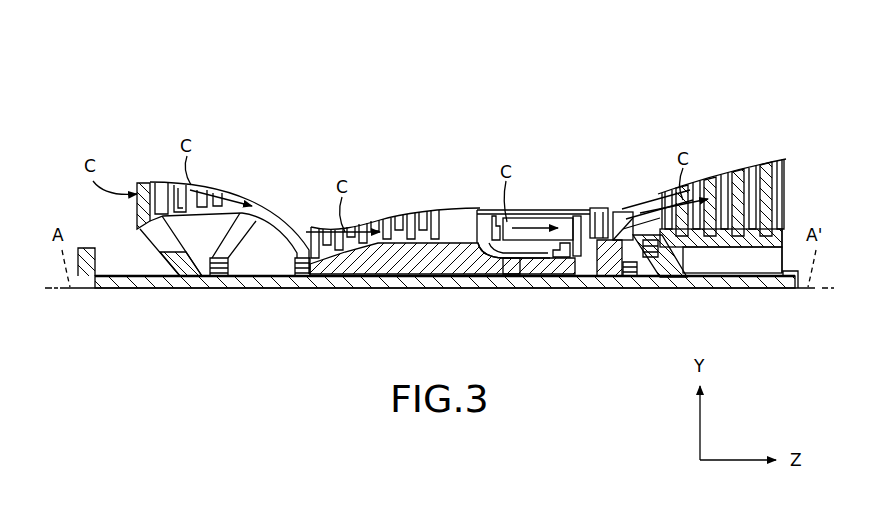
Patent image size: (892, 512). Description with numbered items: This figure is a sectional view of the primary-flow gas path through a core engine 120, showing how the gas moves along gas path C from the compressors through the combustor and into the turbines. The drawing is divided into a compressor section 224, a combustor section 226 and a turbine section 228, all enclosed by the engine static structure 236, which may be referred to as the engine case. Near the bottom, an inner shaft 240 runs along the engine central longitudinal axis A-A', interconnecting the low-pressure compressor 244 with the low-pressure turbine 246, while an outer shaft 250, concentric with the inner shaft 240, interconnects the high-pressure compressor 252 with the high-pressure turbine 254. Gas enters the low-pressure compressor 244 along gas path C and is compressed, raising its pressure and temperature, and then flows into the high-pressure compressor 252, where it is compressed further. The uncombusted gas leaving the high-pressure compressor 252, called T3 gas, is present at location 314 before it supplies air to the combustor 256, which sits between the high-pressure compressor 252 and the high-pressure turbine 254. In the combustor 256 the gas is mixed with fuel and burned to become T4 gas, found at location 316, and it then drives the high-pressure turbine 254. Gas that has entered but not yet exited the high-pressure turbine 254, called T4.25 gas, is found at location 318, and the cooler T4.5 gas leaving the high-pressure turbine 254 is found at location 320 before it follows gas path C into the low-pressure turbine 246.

The core engine 120 is at (579, 76).
The compressor section 224 is at (137, 121).
The combustor section 226 is at (585, 121).
The turbine section 228 is at (783, 121).
The engine static structure 236 is at (280, 205).
The inner shaft 240 is at (409, 284).
The low-pressure compressor 244 is at (216, 190).
The low-pressure turbine 246 is at (725, 178).
The outer shaft 250 is at (535, 272).
The high-pressure compressor 252 is at (400, 224).
The high-pressure turbine 254 is at (620, 228).
The combustor 256 is at (538, 240).
The location of T3 gas 314 is at (486, 216).
The location of T4 gas 316 is at (564, 230).
The location of T4.25 gas 318 is at (600, 208).
The location of T4.5 gas 320 is at (655, 210).